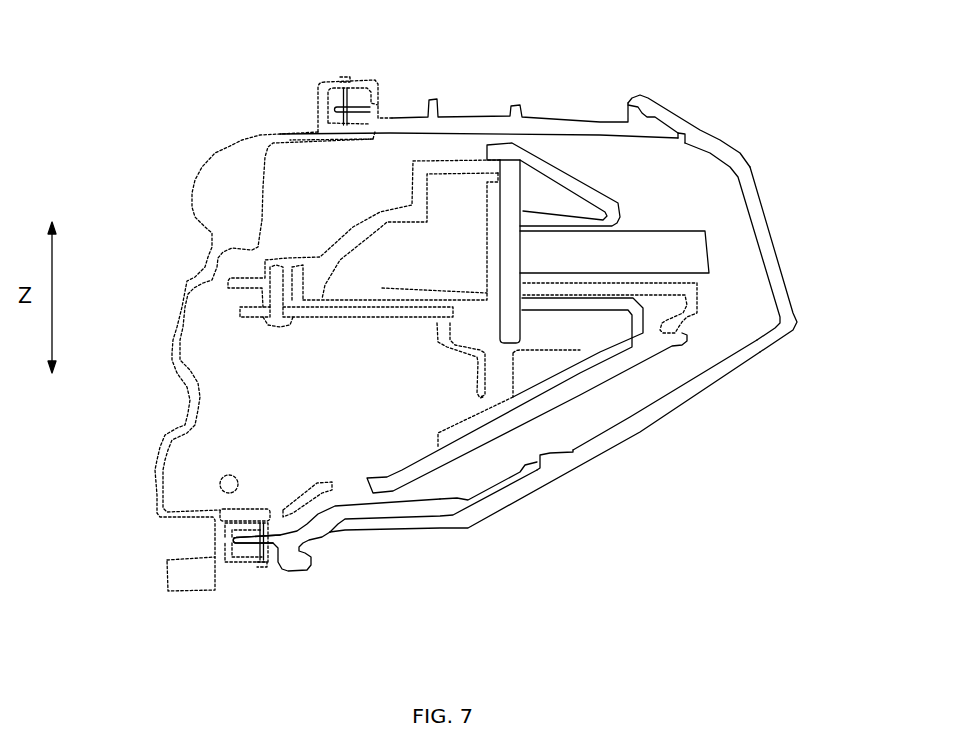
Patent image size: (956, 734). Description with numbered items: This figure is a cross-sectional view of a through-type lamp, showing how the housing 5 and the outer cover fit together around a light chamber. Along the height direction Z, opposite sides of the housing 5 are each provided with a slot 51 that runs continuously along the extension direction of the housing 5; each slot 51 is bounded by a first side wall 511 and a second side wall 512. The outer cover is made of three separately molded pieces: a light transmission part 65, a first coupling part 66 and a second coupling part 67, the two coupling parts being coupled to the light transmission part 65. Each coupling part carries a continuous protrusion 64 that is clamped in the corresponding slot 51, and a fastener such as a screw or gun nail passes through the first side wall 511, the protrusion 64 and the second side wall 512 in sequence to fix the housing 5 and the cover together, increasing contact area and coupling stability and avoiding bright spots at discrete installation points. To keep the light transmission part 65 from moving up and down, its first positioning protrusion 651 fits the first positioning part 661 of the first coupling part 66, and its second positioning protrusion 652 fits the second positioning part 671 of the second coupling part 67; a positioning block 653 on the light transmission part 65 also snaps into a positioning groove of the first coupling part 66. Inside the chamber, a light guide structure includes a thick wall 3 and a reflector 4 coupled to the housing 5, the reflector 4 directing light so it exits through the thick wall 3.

The thick wall 3 is at (670, 247).
The reflector 4 is at (382, 290).
The housing 5 is at (230, 207).
The slot 51 is at (355, 97).
The first side wall 511 is at (363, 78).
The second side wall 512 is at (368, 133).
The protrusion 64 is at (353, 110).
The light transmission part 65 is at (725, 372).
The first coupling part 66 is at (575, 123).
The second coupling part 67 is at (338, 517).
The first positioning protrusion 651 is at (687, 143).
The second positioning protrusion 652 is at (547, 460).
The positioning block 653 is at (643, 115).
The first positioning part 661 is at (678, 135).
The second positioning part 671 is at (520, 472).